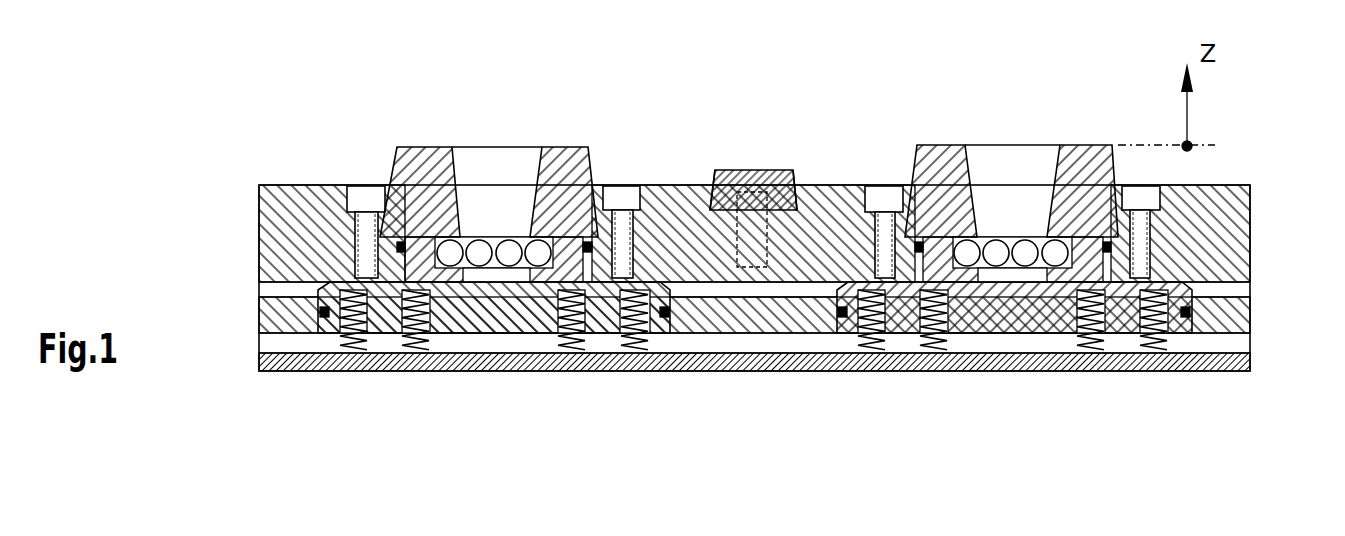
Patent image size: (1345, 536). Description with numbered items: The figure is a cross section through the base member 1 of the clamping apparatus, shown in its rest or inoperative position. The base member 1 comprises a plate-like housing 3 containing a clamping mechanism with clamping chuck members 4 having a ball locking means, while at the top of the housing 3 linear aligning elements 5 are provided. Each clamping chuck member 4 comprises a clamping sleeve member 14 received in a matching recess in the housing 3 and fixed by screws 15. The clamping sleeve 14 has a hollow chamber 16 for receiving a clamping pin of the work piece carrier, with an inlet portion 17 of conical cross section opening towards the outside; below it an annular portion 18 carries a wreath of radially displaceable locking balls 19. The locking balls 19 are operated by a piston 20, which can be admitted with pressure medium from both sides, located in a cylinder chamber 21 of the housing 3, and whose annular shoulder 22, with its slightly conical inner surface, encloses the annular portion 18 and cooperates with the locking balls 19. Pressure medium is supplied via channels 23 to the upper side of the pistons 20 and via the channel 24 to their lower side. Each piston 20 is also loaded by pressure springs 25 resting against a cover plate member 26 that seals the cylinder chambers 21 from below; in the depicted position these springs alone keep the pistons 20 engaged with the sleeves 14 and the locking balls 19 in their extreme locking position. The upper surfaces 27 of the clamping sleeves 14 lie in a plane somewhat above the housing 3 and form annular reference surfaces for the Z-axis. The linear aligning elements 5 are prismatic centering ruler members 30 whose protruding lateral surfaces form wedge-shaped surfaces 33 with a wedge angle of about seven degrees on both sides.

The base member 1 is at (1268, 160).
The housing 3 is at (277, 232).
The clamping chuck member 4 is at (472, 132).
The linear aligning element 5 is at (745, 155).
The clamping sleeve member 14 is at (405, 160).
The screw 15 is at (365, 188).
The hollow chamber 16 is at (495, 195).
The inlet portion 17 is at (450, 170).
The annular portion 18 is at (455, 266).
The locking ball 19 is at (536, 266).
The piston 20 is at (537, 320).
The cylinder chamber 21 is at (387, 345).
The annular shoulder 22 is at (578, 240).
The channel 23 is at (277, 289).
The channel 24 is at (270, 344).
The pressure spring 25 is at (645, 340).
The cover plate member 26 is at (665, 340).
The upper surface 27 is at (562, 150).
The centering ruler member 30 is at (720, 170).
The wedge-shaped surface 33 is at (712, 186).